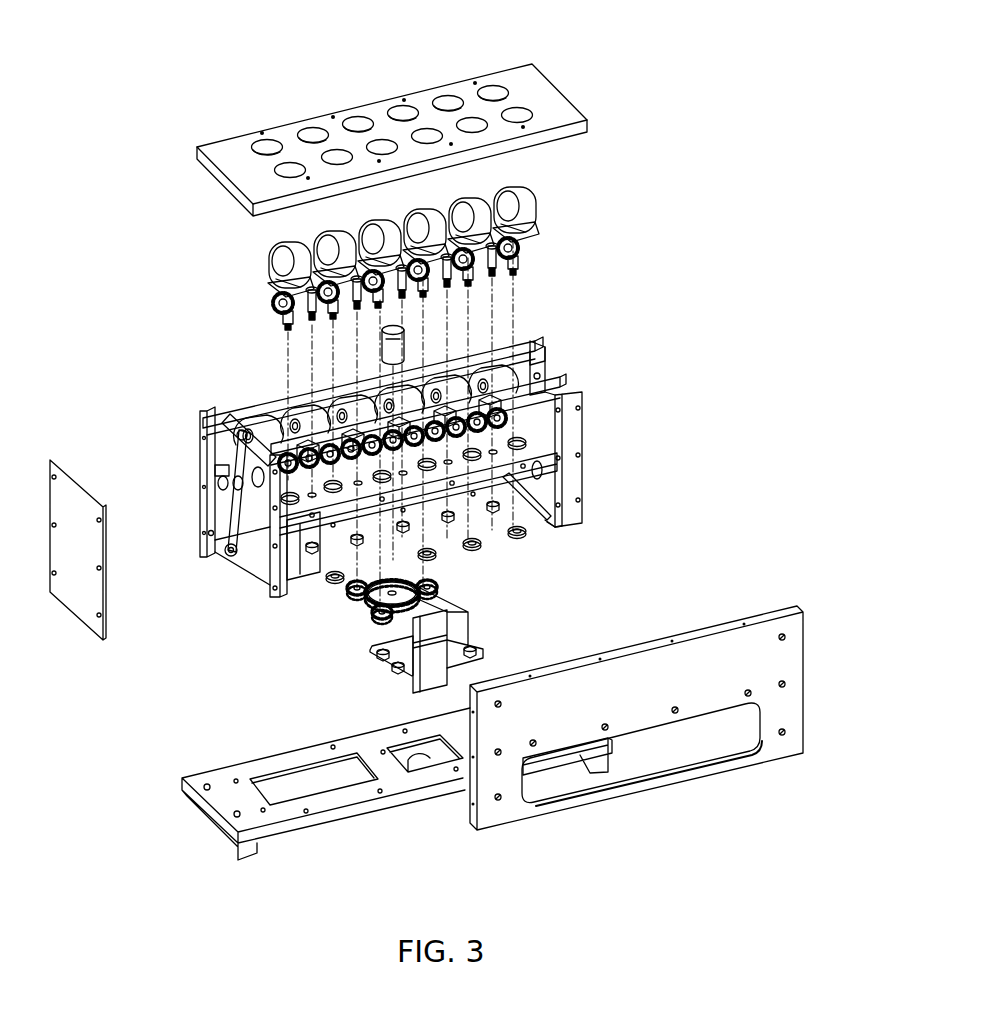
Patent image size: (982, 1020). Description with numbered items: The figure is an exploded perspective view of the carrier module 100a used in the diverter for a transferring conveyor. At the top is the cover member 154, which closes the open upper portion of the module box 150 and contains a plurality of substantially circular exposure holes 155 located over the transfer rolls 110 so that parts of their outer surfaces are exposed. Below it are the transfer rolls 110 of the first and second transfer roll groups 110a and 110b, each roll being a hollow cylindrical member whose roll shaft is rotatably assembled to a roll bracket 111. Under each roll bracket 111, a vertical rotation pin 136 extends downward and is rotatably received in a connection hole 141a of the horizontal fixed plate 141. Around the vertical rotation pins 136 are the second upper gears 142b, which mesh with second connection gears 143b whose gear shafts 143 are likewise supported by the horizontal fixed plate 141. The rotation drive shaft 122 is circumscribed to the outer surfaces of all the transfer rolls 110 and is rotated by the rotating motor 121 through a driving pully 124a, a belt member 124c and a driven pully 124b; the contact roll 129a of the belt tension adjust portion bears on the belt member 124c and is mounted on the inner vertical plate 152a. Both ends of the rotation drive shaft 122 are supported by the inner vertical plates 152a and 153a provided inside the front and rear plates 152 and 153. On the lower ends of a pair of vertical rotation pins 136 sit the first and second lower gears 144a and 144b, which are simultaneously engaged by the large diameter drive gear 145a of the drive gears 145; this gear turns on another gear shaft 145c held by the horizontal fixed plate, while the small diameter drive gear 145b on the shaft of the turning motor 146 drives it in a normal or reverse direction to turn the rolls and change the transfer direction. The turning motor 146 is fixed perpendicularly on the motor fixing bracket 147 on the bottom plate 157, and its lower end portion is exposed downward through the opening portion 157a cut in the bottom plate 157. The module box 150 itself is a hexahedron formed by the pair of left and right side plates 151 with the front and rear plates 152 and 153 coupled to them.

The carrier module 100a is at (114, 131).
The second transfer roll group 110b is at (655, 195).
The transfer roll 110 is at (525, 202).
The roll bracket 111 is at (540, 222).
The second upper gear 142b is at (532, 253).
The vertical rotation pin 136 is at (527, 265).
The gear shaft 143 is at (510, 270).
The second connection gear 143b is at (500, 270).
The rotation drive shaft 122 is at (545, 395).
The horizontal fixed plate 141 is at (508, 430).
The connection hole 141a is at (558, 455).
The rear plate 153 is at (577, 467).
The inner vertical plate 153a is at (555, 527).
The module box 150 is at (695, 518).
The side plate 151 is at (700, 668).
The drive gears 145 is at (505, 592).
The large diameter drive gear 145a is at (435, 600).
The small diameter drive gear 145b is at (435, 577).
The gear shaft 145c is at (393, 348).
The first transfer roll group 110a is at (265, 405).
The driven pully 124b is at (227, 448).
The contact roll 129a is at (213, 470).
The inner vertical plate 152a is at (223, 513).
The front plate 152 is at (78, 597).
The belt member 124c is at (200, 520).
The driving pully 124a is at (227, 558).
The rotating motor 121 is at (226, 560).
The first lower gear 144a is at (342, 597).
The second lower gear 144b is at (375, 625).
The motor fixing bracket 147 is at (380, 655).
The turning motor 146 is at (410, 690).
The cover member 154 is at (237, 146).
The exposure hole 155 is at (266, 140).
The bottom plate 157 is at (310, 820).
The opening portion 157a is at (417, 763).